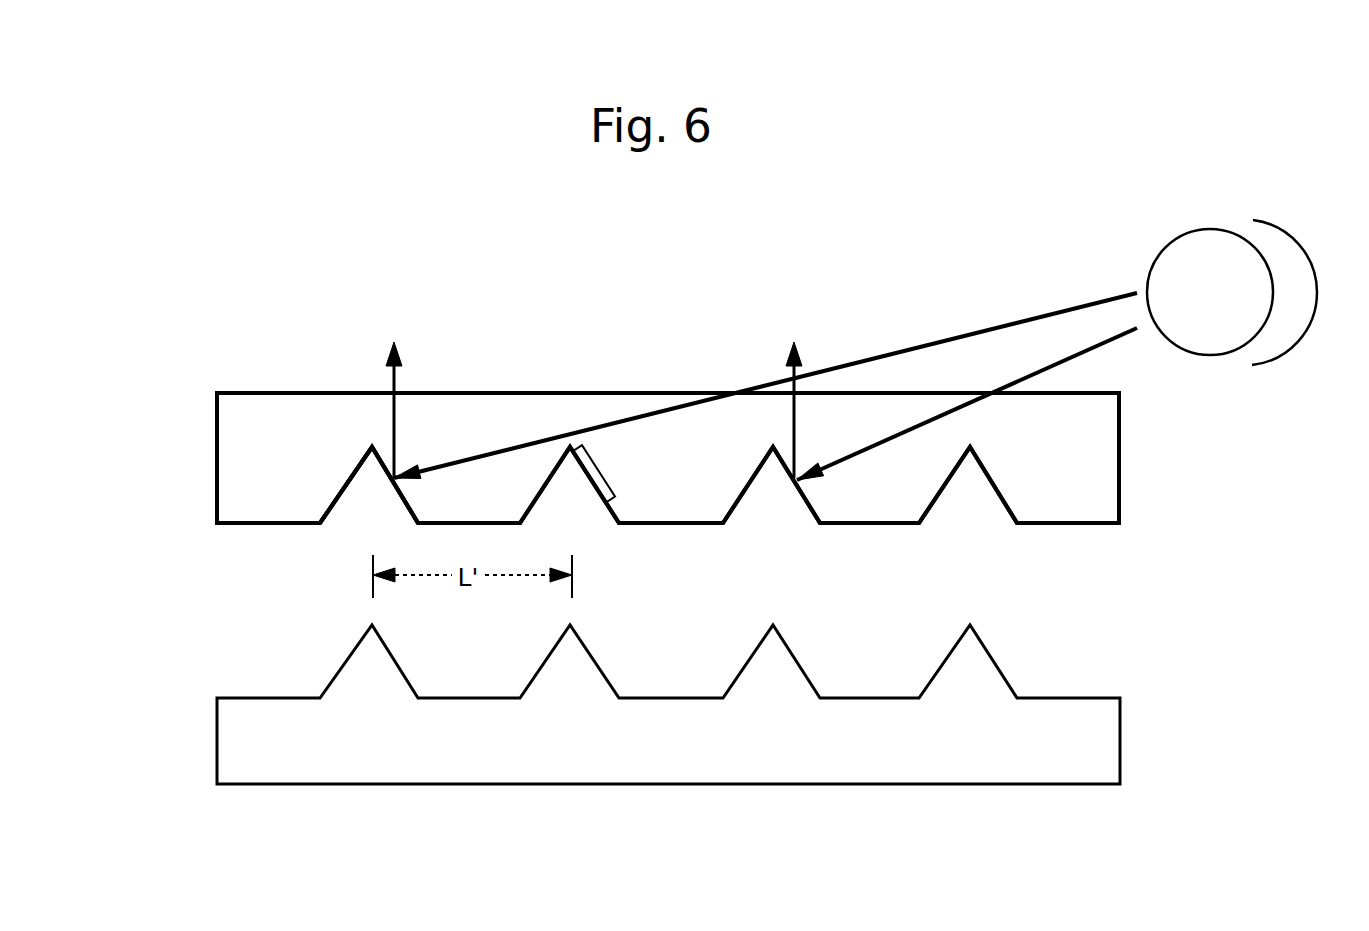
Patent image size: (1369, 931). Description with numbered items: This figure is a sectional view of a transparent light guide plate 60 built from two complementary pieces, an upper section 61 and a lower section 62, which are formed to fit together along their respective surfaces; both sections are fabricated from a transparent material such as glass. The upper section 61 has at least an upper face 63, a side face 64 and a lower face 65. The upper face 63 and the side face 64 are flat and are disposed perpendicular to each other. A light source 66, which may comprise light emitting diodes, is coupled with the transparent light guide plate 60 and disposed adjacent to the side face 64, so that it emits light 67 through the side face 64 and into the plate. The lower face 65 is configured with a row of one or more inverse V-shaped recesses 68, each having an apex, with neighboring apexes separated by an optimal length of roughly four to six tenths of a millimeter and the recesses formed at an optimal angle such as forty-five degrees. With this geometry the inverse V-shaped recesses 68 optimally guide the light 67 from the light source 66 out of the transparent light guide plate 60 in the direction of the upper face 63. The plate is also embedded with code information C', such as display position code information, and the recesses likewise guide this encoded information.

The transparent light guide plate 60 is at (90, 207).
The upper section 61 is at (247, 468).
The lower section 62 is at (248, 742).
The upper face 63 is at (857, 388).
The side face 64 is at (1123, 417).
The lower face 65 is at (1093, 530).
The light source 66 is at (1207, 265).
The light 67 is at (1087, 347).
The inverse V-shaped recess 68 is at (365, 508).
The code information C' is at (656, 361).